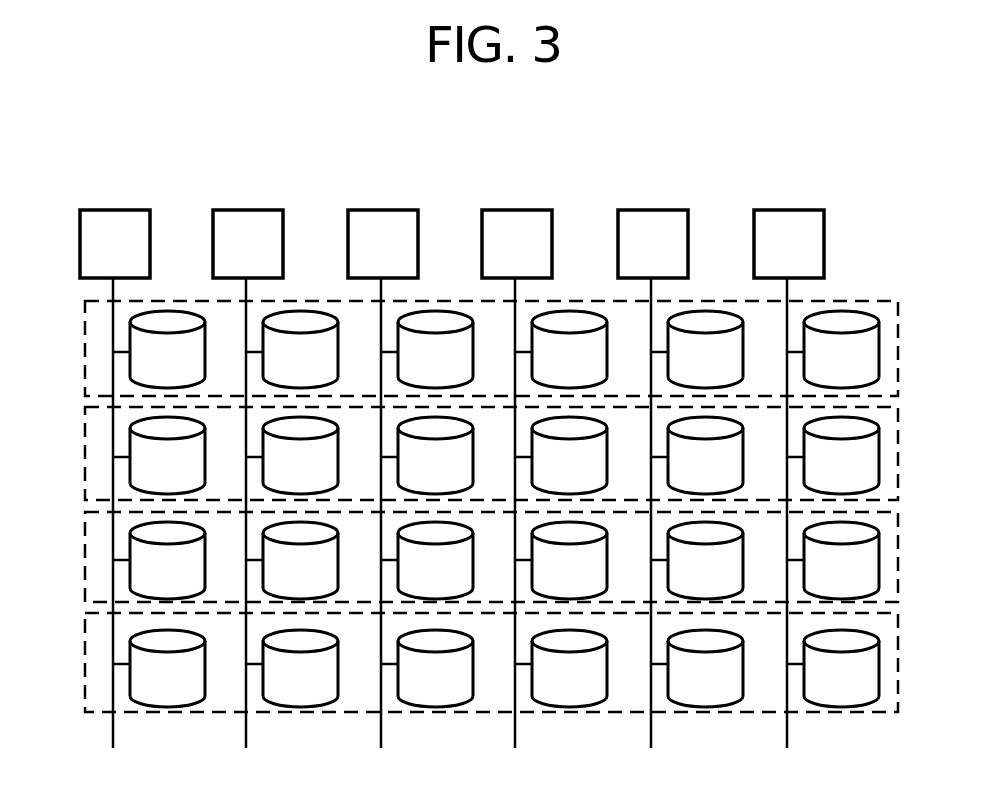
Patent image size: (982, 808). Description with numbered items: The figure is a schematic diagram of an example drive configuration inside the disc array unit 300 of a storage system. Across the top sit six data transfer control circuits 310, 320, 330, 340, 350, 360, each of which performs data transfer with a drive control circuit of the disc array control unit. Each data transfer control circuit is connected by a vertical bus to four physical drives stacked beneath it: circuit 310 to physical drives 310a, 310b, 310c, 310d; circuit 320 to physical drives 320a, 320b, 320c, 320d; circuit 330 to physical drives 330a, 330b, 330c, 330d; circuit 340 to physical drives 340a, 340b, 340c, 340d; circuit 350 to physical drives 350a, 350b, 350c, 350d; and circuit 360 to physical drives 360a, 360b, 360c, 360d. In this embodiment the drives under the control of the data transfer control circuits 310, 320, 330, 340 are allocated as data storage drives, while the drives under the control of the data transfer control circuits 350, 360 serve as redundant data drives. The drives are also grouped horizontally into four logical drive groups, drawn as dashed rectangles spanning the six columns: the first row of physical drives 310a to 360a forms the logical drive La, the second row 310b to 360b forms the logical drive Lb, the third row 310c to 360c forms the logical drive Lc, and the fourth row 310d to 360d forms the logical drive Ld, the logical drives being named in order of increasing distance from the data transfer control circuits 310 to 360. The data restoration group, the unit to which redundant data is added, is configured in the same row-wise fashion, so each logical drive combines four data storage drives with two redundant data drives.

The disc array unit 300 is at (901, 130).
The data transfer control circuit 310 is at (118, 210).
The data transfer control circuit 320 is at (251, 210).
The data transfer control circuit 330 is at (386, 210).
The data transfer control circuit 340 is at (520, 210).
The data transfer control circuit 350 is at (656, 210).
The data transfer control circuit 360 is at (792, 210).
The physical drive 310a is at (159, 349).
The physical drive 310b is at (159, 455).
The physical drive 310c is at (159, 560).
The physical drive 310d is at (159, 668).
The physical drive 320a is at (292, 349).
The physical drive 320b is at (292, 455).
The physical drive 320c is at (292, 560).
The physical drive 320d is at (292, 668).
The physical drive 330a is at (427, 349).
The physical drive 330b is at (427, 455).
The physical drive 330c is at (427, 560).
The physical drive 330d is at (427, 668).
The physical drive 340a is at (561, 349).
The physical drive 340b is at (561, 455).
The physical drive 340c is at (561, 560).
The physical drive 340d is at (561, 668).
The physical drive 350a is at (697, 349).
The physical drive 350b is at (697, 455).
The physical drive 350c is at (697, 560).
The physical drive 350d is at (697, 668).
The physical drive 360a is at (833, 349).
The physical drive 360b is at (833, 455).
The physical drive 360c is at (833, 560).
The physical drive 360d is at (833, 668).
The logical drive La is at (85, 376).
The logical drive Lb is at (85, 482).
The logical drive Lc is at (85, 587).
The logical drive Ld is at (86, 692).